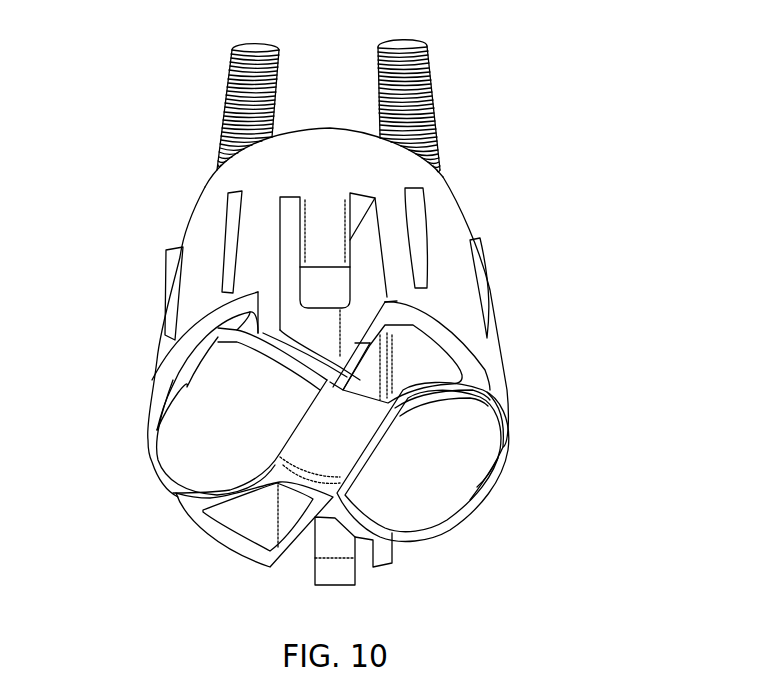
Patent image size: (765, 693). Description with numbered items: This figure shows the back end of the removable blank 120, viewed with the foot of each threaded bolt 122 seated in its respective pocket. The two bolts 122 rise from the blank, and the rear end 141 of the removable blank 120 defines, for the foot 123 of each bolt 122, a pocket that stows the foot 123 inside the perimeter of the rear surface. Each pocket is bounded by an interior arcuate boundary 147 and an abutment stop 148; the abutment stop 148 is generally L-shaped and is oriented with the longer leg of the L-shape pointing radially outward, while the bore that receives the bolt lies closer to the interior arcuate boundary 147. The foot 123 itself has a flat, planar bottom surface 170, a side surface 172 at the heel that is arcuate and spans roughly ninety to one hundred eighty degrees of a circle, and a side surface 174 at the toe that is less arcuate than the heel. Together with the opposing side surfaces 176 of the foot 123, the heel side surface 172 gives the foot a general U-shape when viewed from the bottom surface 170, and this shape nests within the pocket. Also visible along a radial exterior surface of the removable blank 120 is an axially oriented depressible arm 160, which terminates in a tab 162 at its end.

The removable blank 120 is at (455, 245).
The bolt 122 is at (427, 83).
The foot 123 is at (479, 487).
The rear end 141 is at (487, 374).
The interior arcuate boundary 147 is at (420, 390).
The abutment stop 148 is at (317, 497).
The depressible arm 160 is at (318, 228).
The tab 162 is at (320, 287).
The bottom surface 170 is at (412, 509).
The side surface at the heel 172 is at (167, 485).
The side surface at the toe 174 is at (238, 340).
The opposing side surfaces 176 is at (173, 397).